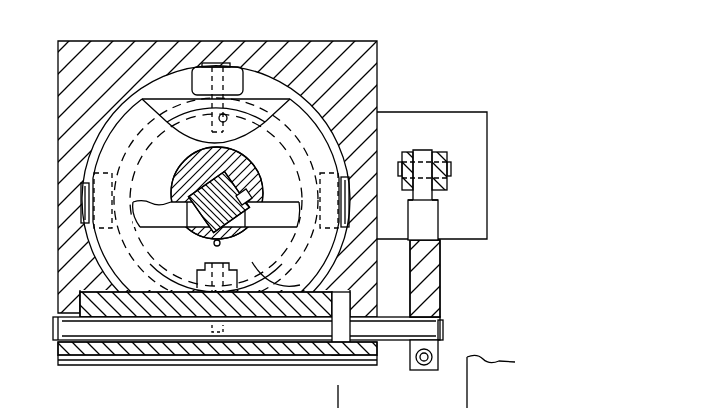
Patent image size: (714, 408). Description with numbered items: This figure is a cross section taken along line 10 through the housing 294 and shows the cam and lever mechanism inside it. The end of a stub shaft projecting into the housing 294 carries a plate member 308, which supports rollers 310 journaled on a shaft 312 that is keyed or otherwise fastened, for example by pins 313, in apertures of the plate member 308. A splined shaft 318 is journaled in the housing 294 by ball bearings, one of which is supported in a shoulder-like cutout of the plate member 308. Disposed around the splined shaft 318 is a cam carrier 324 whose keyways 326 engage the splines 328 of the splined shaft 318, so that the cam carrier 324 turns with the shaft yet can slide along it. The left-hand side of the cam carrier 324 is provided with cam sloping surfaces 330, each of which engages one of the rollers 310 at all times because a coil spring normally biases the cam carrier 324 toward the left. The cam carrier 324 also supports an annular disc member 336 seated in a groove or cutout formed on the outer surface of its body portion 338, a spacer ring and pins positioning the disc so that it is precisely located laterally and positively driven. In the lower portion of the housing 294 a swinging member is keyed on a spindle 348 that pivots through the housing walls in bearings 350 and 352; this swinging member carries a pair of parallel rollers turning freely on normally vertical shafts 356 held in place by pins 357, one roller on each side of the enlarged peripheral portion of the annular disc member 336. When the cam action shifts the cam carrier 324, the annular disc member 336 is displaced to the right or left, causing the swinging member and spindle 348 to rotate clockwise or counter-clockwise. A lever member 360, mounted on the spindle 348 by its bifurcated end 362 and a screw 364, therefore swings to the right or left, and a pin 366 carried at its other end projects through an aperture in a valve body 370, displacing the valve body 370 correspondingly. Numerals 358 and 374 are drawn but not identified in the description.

The cross-sectional view line 10 is at (273, 0).
The housing 294 is at (133, 52).
The plate member 308 is at (285, 109).
The rollers 310 is at (192, 88).
The shaft 312 is at (228, 105).
The pins 313 is at (226, 121).
The splined shaft 318 is at (192, 220).
The cam carrier 324 is at (118, 118).
The keyways 326 is at (253, 192).
The splines 328 is at (252, 176).
The cam sloping surfaces 330 is at (133, 156).
The annular disc member 336 is at (340, 248).
The body portion 338 is at (240, 160).
The spindle 348 is at (70, 328).
The bearing 350 is at (80, 307).
The bearing 352 is at (360, 360).
The shafts 356 is at (227, 304).
The pins 357 is at (230, 324).
The lobe 358 is at (294, 277).
The lever member 360 is at (435, 223).
The bifurcated end 362 is at (438, 330).
The screw 364 is at (422, 370).
The pin 366 is at (447, 187).
The valve body 370 is at (407, 192).
The bracket plate 374 is at (477, 125).